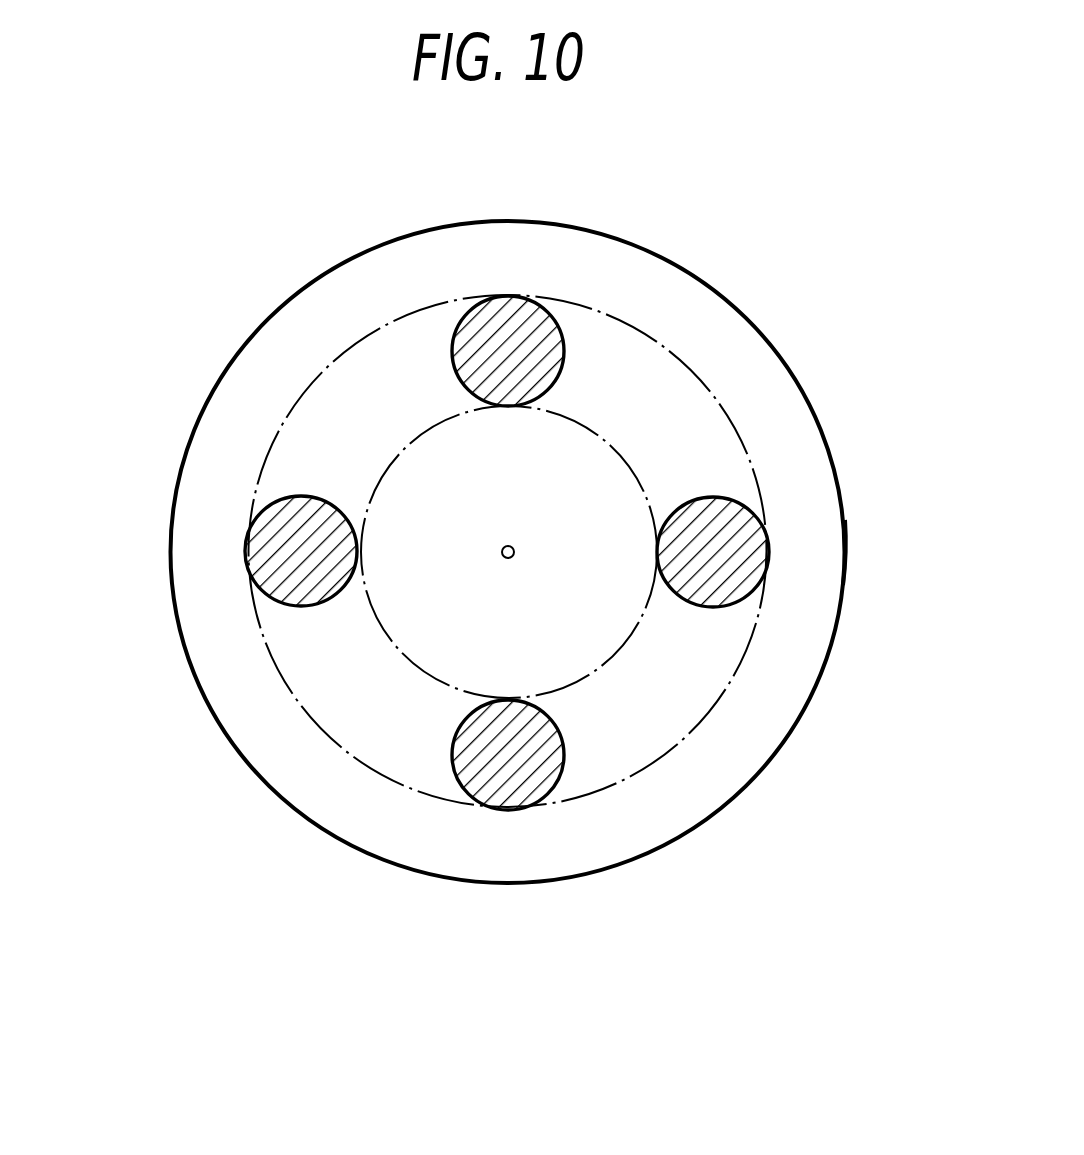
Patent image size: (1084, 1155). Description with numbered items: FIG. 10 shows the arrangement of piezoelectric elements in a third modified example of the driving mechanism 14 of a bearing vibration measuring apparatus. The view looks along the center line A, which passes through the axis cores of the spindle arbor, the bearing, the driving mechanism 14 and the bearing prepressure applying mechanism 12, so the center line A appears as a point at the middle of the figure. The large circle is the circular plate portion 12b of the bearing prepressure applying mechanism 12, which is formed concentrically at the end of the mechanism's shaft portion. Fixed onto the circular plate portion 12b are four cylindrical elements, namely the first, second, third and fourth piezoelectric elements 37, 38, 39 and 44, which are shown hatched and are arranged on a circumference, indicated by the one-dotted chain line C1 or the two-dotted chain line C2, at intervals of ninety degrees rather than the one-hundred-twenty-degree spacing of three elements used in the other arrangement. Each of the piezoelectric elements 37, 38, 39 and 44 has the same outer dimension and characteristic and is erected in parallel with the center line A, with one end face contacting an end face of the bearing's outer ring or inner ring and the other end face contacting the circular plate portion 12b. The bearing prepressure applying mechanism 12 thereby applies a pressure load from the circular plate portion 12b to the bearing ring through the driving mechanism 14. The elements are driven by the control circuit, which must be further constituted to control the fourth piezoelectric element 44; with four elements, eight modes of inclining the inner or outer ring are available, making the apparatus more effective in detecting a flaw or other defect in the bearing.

The bearing prepressure applying mechanism 12 is at (801, 384).
The circular plate portion 12b is at (832, 531).
The driving mechanism 14 is at (486, 574).
The first piezoelectric element 37 is at (546, 303).
The second piezoelectric element 38 is at (246, 551).
The third piezoelectric element 39 is at (505, 810).
The fourth piezoelectric element 44 is at (712, 612).
The one-dotted chain line C1 is at (369, 330).
The two-dotted chain line C2 is at (365, 495).
The center line A is at (508, 559).